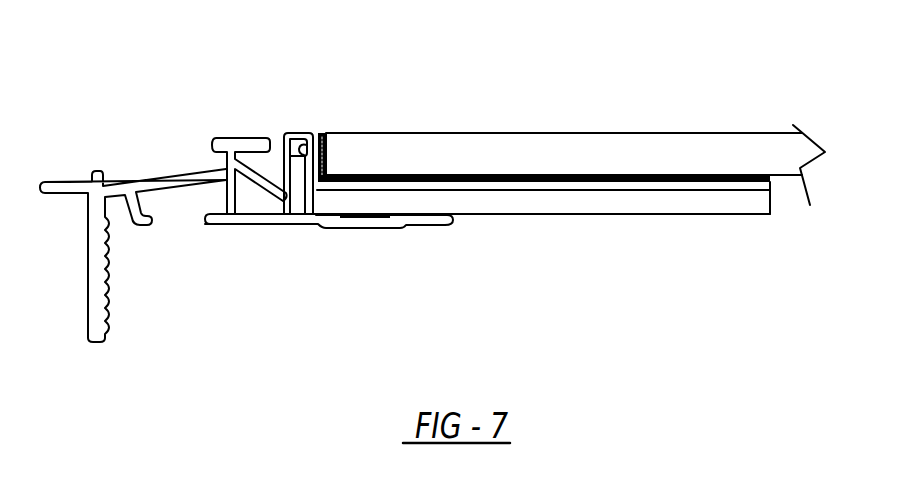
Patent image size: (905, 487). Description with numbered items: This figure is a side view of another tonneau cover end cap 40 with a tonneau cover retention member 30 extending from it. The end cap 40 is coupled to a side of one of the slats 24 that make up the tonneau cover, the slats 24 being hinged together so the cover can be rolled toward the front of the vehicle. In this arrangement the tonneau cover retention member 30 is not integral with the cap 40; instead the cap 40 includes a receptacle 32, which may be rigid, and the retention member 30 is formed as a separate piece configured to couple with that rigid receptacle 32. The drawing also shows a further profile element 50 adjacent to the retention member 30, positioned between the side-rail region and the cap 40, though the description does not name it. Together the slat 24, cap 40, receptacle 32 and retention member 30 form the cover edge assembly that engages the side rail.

The support bracket profile 50 is at (248, 137).
The tonneau cover retention member 30 is at (265, 192).
The receptacle 32 is at (310, 167).
The end cap 40 is at (322, 133).
The slat 24 is at (600, 133).